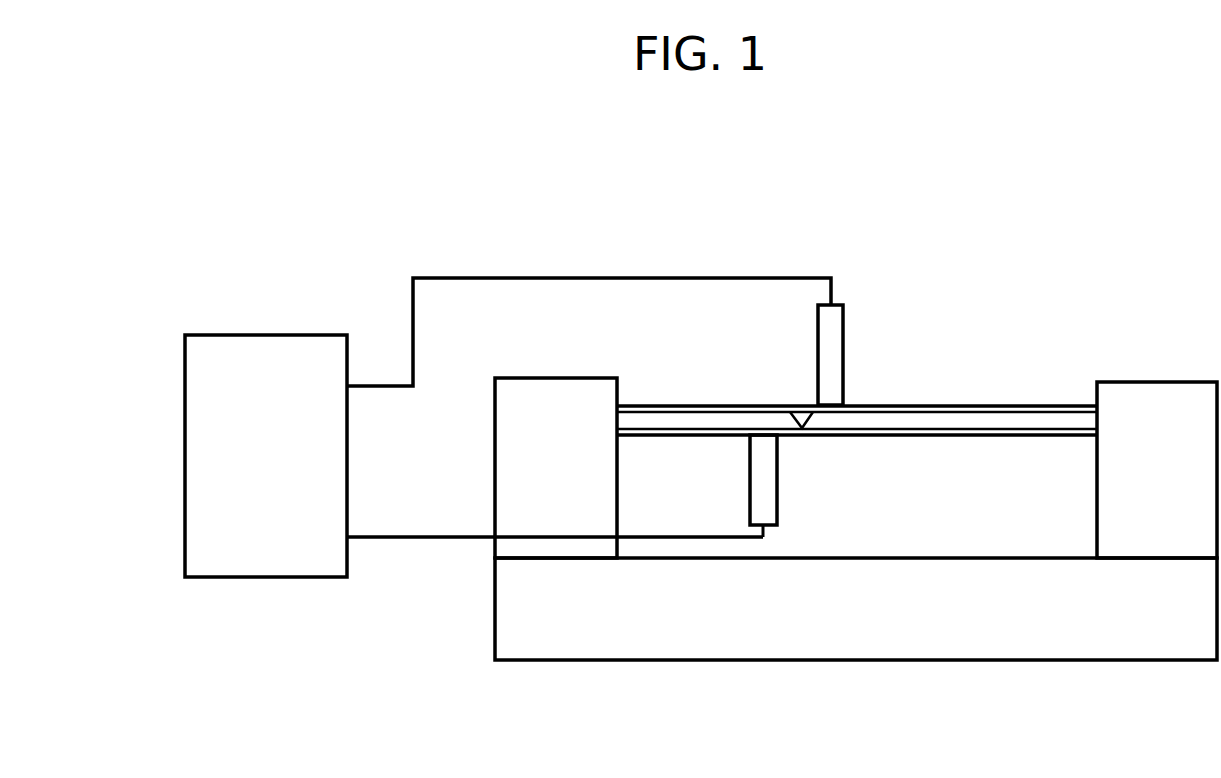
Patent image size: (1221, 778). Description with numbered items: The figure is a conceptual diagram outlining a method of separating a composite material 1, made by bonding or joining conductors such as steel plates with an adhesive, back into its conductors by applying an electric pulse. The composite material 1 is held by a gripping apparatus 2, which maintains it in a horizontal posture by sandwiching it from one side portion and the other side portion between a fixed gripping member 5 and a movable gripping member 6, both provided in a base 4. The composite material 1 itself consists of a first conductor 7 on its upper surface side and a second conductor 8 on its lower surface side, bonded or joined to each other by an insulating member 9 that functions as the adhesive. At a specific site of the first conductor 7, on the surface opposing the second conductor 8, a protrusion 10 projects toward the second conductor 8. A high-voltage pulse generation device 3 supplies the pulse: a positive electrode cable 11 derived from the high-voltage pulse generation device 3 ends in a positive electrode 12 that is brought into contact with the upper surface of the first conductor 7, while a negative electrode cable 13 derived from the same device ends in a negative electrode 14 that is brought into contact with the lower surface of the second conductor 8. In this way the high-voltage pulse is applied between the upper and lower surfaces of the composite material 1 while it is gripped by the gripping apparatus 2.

The composite material 1 is at (952, 401).
The gripping apparatus 2 is at (968, 274).
The high-voltage pulse generation device 3 is at (257, 333).
The base 4 is at (733, 661).
The fixed gripping member 5 is at (565, 378).
The movable gripping member 6 is at (1147, 382).
The first conductor 7 is at (731, 405).
The second conductor 8 is at (950, 436).
The insulating member 9 is at (840, 422).
The protrusion 10 is at (805, 431).
The positive electrode cable 11 is at (526, 278).
The positive electrode 12 is at (843, 348).
The negative electrode cable 13 is at (407, 540).
The negative electrode 14 is at (750, 490).